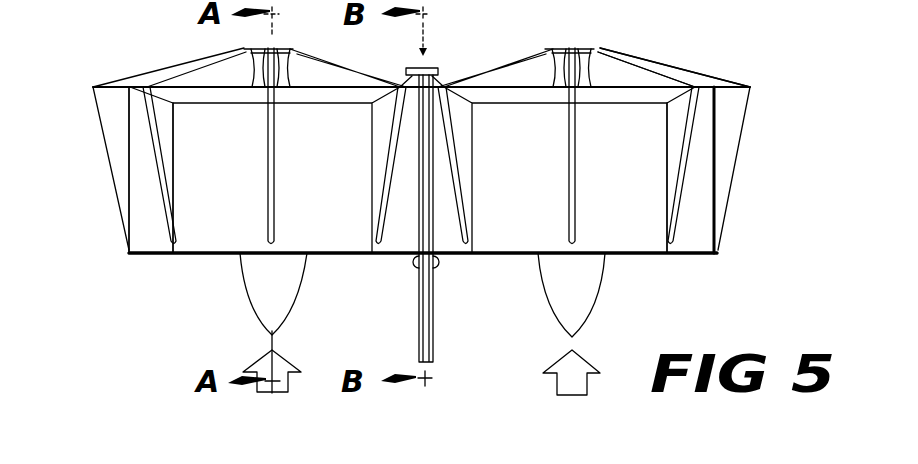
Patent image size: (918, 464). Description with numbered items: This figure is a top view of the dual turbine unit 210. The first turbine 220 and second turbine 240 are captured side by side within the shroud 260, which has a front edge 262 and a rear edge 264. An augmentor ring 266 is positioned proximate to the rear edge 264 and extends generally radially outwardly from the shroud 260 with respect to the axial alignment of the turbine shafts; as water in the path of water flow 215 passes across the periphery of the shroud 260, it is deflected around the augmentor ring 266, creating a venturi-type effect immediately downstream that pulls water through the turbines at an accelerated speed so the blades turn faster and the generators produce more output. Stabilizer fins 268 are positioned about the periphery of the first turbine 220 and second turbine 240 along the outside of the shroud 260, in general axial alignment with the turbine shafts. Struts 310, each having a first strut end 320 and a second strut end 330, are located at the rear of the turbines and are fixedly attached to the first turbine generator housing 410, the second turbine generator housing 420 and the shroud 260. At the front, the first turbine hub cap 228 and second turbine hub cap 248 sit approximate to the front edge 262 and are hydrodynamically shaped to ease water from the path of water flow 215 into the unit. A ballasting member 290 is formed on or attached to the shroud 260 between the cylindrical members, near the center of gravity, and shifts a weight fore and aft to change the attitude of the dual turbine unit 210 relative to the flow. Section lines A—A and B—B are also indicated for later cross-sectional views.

The dual turbine unit 210 is at (136, 42).
The first turbine 220 is at (167, 299).
The second turbine 240 is at (642, 292).
The shroud 260 is at (242, 184).
The front edge 262 is at (692, 256).
The rear edge 264 is at (137, 106).
The augmentor ring 266 is at (131, 94).
The stabilizer fins 268 is at (170, 170).
The first turbine hub cap 228 is at (292, 287).
The second turbine hub cap 248 is at (590, 285).
The path of water flow 215 is at (284, 359).
The ballasting member 290 is at (408, 268).
The struts 310 is at (494, 77).
The first strut end 320 is at (689, 76).
The second strut end 330 is at (587, 48).
The first turbine generator housing 410 is at (281, 49).
The second turbine generator housing 420 is at (558, 48).